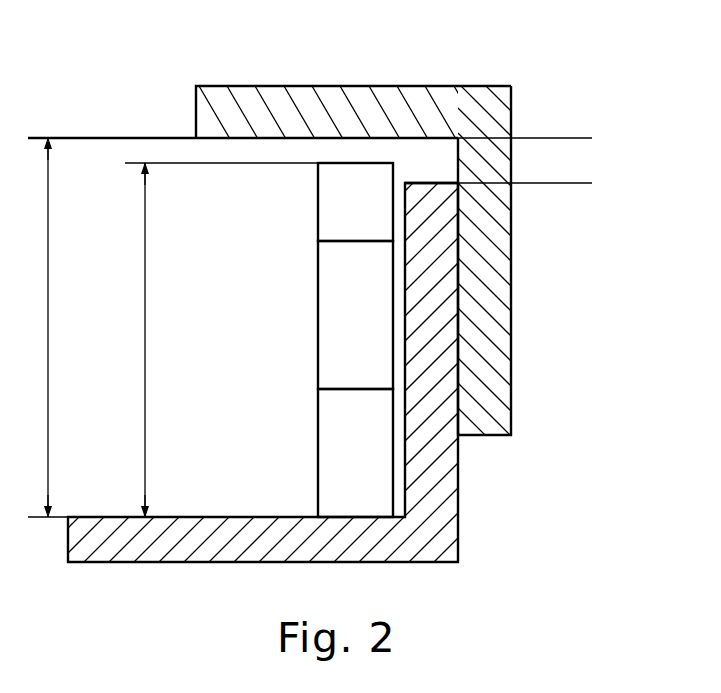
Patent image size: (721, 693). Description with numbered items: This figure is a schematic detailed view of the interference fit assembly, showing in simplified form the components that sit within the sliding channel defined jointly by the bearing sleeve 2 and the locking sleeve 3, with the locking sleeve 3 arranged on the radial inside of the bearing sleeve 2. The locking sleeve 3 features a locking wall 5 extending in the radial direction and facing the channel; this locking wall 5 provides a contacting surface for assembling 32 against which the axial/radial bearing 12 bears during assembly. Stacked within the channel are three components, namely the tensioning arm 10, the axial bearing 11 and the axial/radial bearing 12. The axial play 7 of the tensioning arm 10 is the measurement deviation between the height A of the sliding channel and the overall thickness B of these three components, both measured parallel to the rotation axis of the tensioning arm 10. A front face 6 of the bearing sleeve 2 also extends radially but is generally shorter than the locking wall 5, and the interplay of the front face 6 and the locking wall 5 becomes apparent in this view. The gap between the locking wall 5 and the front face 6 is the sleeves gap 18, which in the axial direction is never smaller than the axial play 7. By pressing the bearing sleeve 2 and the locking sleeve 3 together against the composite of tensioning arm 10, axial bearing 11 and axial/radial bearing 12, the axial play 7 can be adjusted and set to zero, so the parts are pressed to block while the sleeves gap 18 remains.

The bearing sleeve 2 is at (430, 528).
The locking sleeve 3 is at (490, 292).
The locking wall 5 is at (269, 81).
The contacting surface for assembling 32 is at (397, 138).
The front face 6 is at (443, 182).
The axial play 7 is at (359, 122).
The tensioning arm 10 is at (349, 327).
The axial bearing 11 is at (349, 462).
The axial/radial bearing 12 is at (349, 218).
The sleeves gap 18 is at (568, 125).
The height of sliding channel A is at (40, 327).
The overall thickness of the three components B is at (127, 340).